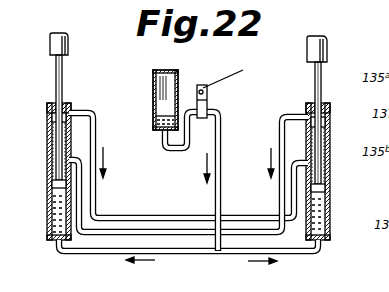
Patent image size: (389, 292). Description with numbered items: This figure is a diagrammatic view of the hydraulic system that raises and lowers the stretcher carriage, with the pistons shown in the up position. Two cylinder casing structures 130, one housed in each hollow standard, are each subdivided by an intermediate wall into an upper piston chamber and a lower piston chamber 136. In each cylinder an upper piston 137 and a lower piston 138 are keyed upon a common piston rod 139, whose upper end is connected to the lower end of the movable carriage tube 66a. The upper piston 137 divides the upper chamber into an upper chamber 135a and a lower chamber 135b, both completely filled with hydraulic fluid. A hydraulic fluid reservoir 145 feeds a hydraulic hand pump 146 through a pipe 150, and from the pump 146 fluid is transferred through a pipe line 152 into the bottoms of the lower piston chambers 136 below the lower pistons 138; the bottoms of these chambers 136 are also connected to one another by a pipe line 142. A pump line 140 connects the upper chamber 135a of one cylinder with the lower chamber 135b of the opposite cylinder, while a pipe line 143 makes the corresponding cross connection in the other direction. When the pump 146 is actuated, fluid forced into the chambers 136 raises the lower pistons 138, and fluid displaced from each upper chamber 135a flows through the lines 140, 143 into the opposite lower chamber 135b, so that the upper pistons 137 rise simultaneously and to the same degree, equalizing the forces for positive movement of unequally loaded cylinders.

The movable carriage tube 66a is at (67, 49).
The common piston rod 139 is at (63, 84).
The upper piston 137 is at (50, 118).
The cylinder casing structure 130 is at (50, 125).
The upper chamber 135a is at (52, 152).
The lower chamber 135b is at (53, 178).
The lower piston 138 is at (50, 190).
The lower piston chamber 136 is at (50, 219).
The pump line 140 is at (96, 200).
The pipe line 143 is at (92, 231).
The pipe line 142 is at (97, 254).
The hydraulic fluid reservoir 145 is at (152, 90).
The hydraulic hand pump 146 is at (210, 96).
The pipe 150 is at (171, 150).
The pipe line 152 is at (222, 146).